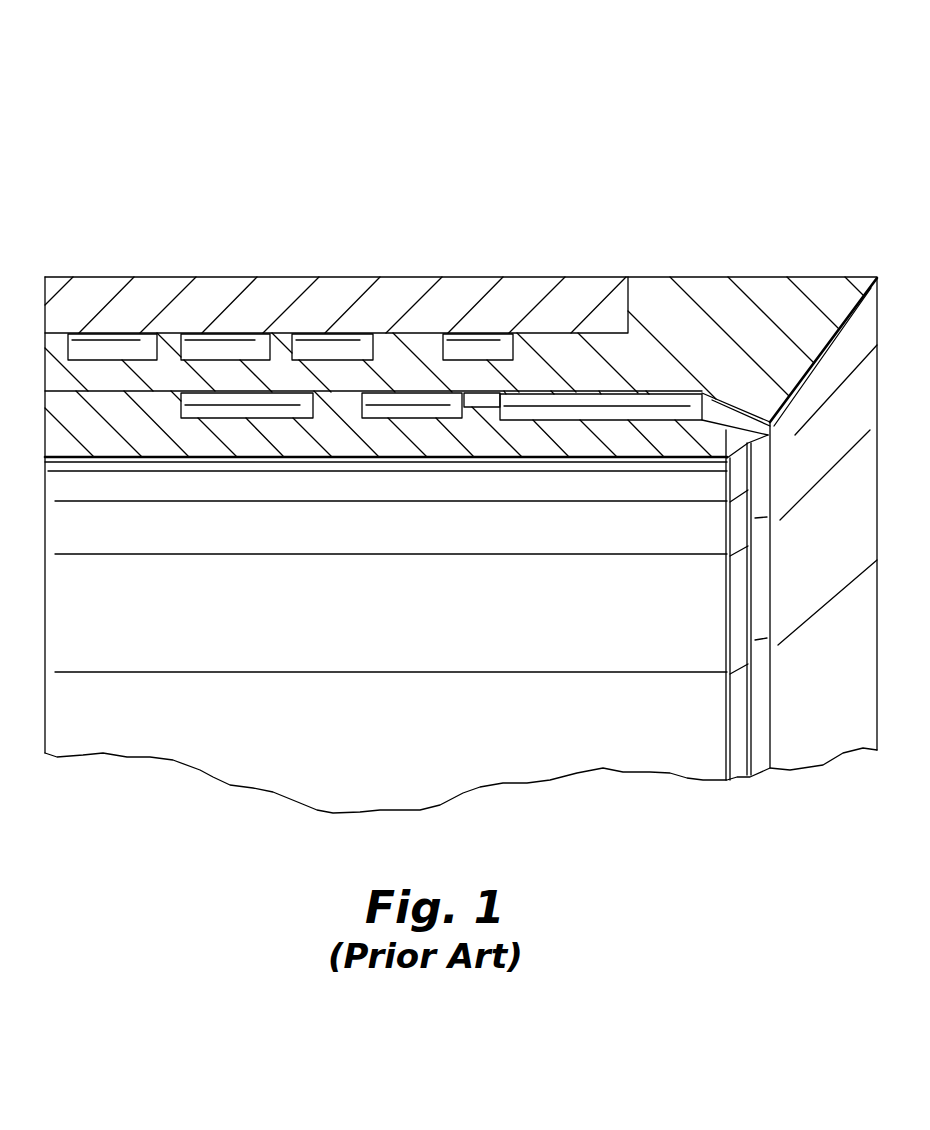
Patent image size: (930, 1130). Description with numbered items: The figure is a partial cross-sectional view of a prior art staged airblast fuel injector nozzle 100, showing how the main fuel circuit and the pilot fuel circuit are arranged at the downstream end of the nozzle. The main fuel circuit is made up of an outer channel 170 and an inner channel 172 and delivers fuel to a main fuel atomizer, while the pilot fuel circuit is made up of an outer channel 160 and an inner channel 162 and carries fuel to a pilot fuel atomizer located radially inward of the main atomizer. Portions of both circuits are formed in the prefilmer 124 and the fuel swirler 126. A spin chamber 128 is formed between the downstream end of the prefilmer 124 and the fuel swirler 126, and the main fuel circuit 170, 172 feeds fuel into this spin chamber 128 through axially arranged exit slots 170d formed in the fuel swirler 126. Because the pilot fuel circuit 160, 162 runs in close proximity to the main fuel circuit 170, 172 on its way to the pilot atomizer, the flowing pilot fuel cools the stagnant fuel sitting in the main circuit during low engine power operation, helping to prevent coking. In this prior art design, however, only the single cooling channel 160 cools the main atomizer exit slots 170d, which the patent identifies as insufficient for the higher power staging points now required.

The magnetic head structure (prior art) 100 is at (673, 103).
The prefilmer 124 is at (748, 277).
The fuel swirler 126 is at (652, 460).
The spin chamber 128 is at (593, 398).
The pilot fuel circuit outer channel 160 is at (108, 343).
The pilot fuel circuit inner channel 162 is at (207, 403).
The main fuel circuit outer channel 170 is at (215, 343).
The exit slots 170d is at (487, 398).
The main fuel circuit inner channel 172 is at (395, 405).